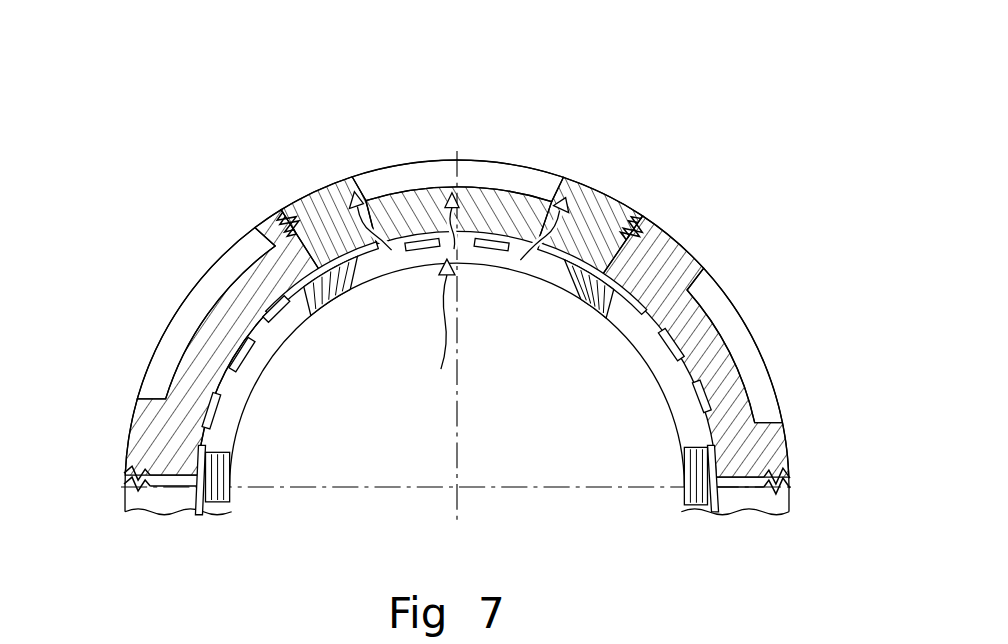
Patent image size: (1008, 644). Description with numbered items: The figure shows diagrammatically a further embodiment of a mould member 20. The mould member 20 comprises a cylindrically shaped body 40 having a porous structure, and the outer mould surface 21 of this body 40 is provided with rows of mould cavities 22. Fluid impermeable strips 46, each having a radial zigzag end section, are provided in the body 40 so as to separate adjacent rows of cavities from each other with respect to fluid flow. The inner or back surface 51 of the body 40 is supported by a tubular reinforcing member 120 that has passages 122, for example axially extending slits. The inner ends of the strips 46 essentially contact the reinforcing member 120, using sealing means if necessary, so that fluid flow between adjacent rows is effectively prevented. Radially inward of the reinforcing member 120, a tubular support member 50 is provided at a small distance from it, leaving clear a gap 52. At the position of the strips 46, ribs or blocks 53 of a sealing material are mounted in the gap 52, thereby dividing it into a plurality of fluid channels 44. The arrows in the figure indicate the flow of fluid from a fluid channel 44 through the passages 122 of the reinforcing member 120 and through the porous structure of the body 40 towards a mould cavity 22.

The mould member 20 is at (570, 128).
The outer mould surface 21 is at (332, 190).
The mould cavity 22 is at (393, 172).
The cylindrically shaped body 40 is at (257, 268).
The fluid channel 44 is at (498, 258).
The fluid impermeable strip 46 is at (296, 240).
The tubular support member 50 is at (208, 442).
The inner or back surface 51 is at (250, 322).
The gap 52 is at (663, 373).
The ribs or blocks of sealing material 53 is at (340, 294).
The tubular reinforcing member 120 is at (289, 325).
The passages 122 is at (208, 436).